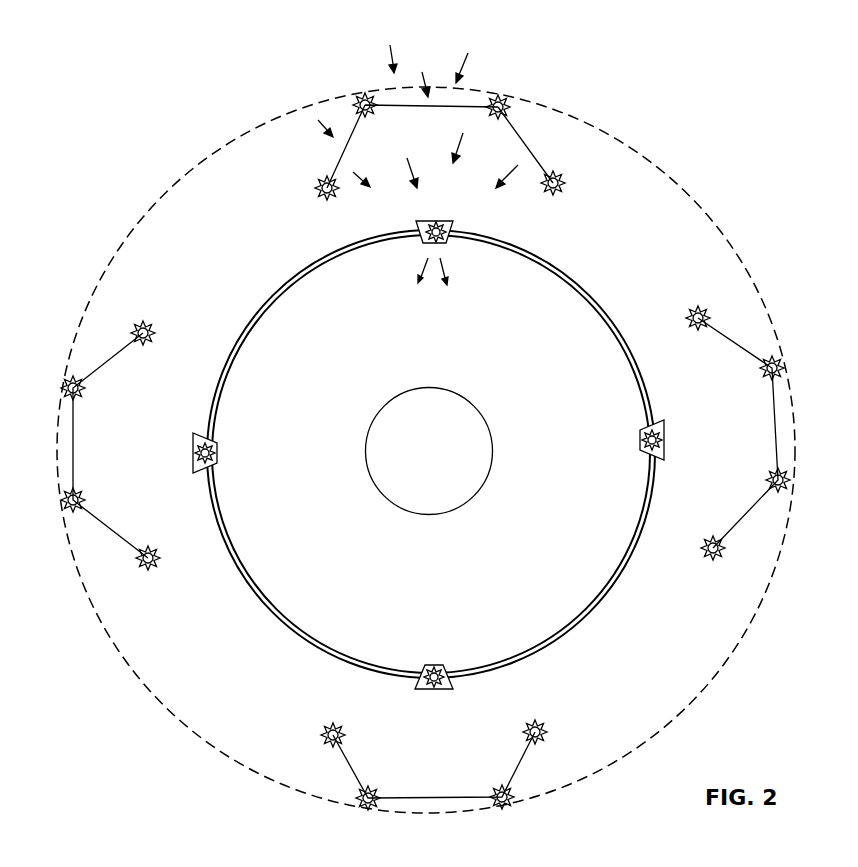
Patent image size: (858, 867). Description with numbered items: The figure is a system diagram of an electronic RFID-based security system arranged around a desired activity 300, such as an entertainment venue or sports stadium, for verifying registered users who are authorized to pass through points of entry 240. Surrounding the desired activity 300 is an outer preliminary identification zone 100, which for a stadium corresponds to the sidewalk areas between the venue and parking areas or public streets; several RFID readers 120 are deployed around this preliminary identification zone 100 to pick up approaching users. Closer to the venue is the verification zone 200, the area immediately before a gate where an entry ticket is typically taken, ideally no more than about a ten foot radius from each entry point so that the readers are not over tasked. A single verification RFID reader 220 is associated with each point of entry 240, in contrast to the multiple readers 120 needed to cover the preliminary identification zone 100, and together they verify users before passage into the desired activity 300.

The preliminary identification zone 100 is at (655, 192).
The RFID readers 120 is at (500, 100).
The verification zone 200 is at (592, 290).
The RFID readers 220 is at (437, 244).
The points of entry 240 is at (411, 245).
The desired activity 300 is at (446, 402).